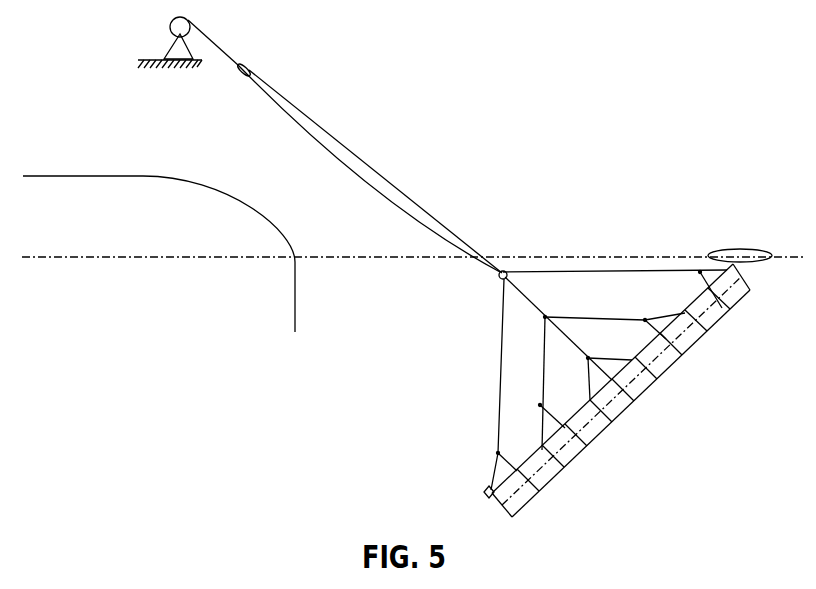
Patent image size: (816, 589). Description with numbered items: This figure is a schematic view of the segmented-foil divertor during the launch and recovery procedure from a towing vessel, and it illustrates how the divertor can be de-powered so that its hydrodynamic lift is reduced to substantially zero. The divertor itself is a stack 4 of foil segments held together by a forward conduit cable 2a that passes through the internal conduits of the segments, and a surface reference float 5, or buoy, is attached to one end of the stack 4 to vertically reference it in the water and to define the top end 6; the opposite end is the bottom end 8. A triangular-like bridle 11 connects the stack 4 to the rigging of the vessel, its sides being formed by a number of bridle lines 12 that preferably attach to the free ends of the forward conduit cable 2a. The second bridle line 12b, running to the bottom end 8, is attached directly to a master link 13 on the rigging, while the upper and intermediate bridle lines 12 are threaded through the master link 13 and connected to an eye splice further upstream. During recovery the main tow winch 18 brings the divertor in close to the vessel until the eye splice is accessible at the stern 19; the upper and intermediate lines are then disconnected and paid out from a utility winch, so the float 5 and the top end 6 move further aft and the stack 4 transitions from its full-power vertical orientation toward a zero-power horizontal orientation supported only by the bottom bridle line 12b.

The main tow winch 18 is at (124, 43).
The bridle lines 12 is at (325, 149).
The second bridle line 12b is at (502, 317).
The master link 13 is at (507, 271).
The surface reference float 5 is at (744, 249).
The top end 6 is at (755, 276).
The stern 19 is at (240, 276).
The bridle 11 is at (423, 381).
The forward conduit cable 2a is at (648, 355).
The stack 4 is at (632, 477).
The bottom end 8 is at (496, 504).